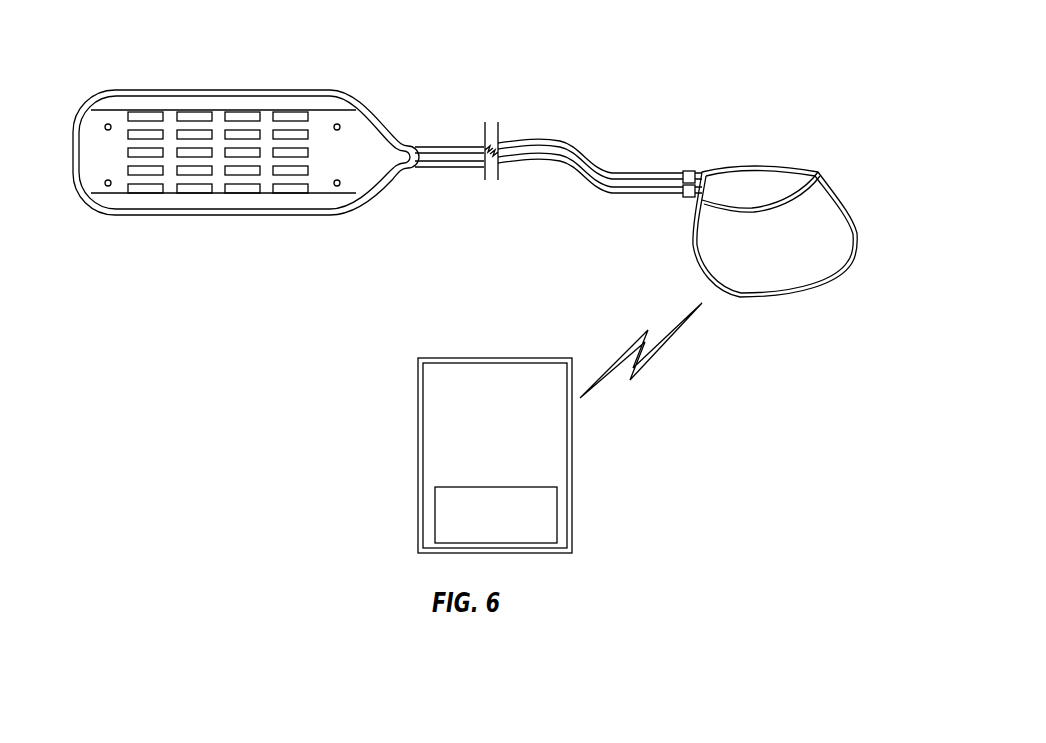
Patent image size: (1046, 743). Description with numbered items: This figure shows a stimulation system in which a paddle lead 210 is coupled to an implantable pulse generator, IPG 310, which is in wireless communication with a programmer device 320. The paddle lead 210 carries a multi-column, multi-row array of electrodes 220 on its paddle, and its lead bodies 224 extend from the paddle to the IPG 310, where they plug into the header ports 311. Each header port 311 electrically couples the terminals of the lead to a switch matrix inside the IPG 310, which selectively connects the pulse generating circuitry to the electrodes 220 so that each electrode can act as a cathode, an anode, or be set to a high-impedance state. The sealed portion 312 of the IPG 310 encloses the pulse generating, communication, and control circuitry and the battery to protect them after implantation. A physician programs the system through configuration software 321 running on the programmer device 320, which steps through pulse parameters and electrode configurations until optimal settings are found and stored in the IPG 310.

The paddle lead 210 is at (230, 90).
The electrodes 220 is at (242, 170).
The lead bodies 224 is at (575, 143).
The header ports 311 is at (687, 170).
The sealed portion 312 is at (768, 163).
The IPG 310 is at (811, 205).
The programmer device 320 is at (482, 455).
The configuration software 321 is at (547, 525).